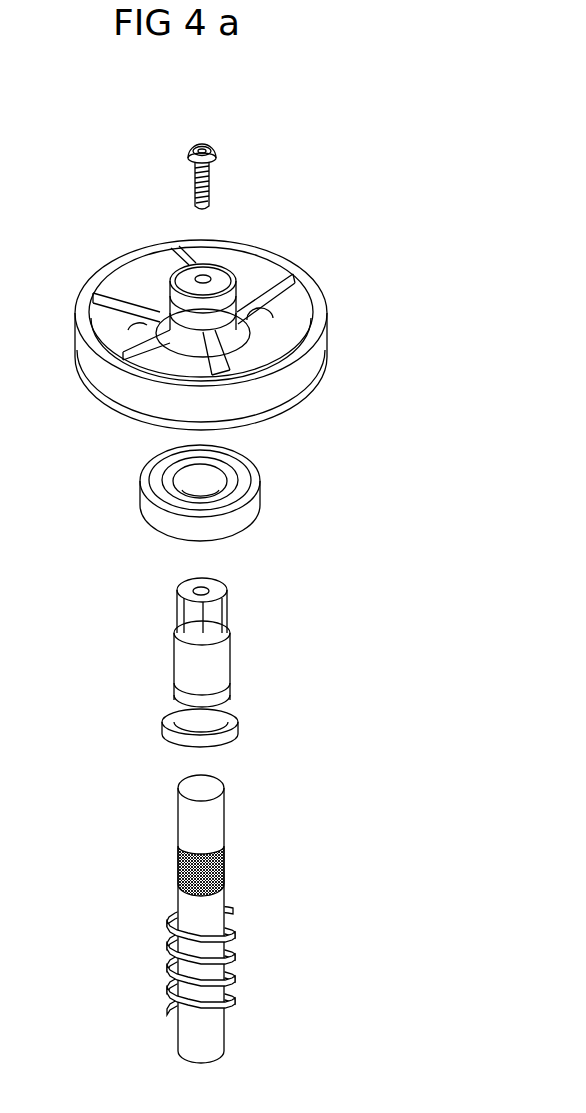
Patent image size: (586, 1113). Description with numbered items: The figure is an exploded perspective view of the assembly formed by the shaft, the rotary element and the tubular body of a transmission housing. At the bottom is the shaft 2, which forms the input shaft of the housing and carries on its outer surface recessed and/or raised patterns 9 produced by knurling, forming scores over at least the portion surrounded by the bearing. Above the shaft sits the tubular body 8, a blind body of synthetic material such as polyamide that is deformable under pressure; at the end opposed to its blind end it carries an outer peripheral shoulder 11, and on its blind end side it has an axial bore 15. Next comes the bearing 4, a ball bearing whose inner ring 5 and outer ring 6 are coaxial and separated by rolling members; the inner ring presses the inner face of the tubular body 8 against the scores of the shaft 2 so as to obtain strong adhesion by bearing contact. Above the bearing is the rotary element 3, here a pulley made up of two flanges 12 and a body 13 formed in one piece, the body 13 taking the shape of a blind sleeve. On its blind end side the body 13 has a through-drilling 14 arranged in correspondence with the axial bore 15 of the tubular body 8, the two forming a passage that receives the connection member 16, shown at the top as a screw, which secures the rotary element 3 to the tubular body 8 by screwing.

The shaft 2 is at (227, 812).
The rotary element 3 is at (460, 240).
The bearing 4 is at (258, 502).
The inner ring 5 is at (168, 492).
The outer ring 6 is at (140, 487).
The tubular body 8 is at (230, 663).
The recessed and/or raised patterns 9 is at (176, 860).
The outer peripheral shoulder 11 is at (243, 723).
The flanges 12 is at (327, 315).
The body 13 is at (247, 300).
The through-drilling 14 is at (210, 276).
The axial bore 15 is at (188, 592).
The connection member 16 is at (217, 175).